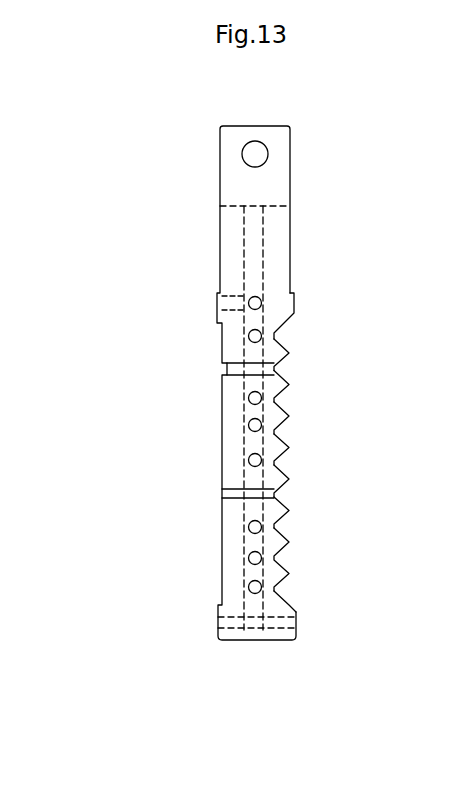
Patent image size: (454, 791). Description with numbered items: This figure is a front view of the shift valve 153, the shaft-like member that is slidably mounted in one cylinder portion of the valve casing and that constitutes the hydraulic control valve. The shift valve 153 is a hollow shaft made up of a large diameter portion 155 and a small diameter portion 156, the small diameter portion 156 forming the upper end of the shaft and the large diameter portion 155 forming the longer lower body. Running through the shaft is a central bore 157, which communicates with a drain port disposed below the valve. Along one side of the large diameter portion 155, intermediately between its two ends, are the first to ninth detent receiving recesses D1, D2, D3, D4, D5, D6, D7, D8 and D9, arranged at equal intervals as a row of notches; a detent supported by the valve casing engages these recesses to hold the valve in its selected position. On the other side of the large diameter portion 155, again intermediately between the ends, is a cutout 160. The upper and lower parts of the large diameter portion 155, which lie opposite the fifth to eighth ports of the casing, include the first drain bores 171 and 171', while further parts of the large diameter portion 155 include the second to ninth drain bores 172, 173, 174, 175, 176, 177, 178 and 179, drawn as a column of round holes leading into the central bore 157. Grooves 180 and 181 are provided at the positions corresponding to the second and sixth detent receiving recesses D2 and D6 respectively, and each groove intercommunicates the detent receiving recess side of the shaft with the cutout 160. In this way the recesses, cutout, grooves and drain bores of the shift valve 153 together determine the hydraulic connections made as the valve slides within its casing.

The shift valve 153 is at (213, 268).
The small diameter portion 156 is at (283, 222).
The cutout 160 is at (219, 326).
The first drain bore 171 is at (167, 272).
The first drain bore 171' is at (184, 684).
The second drain bore 172 is at (259, 299).
The third drain bore 173 is at (248, 337).
The fourth drain bore 174 is at (249, 401).
The fifth drain bore 175 is at (249, 429).
The sixth drain bore 176 is at (249, 462).
The seventh drain bore 177 is at (249, 529).
The eighth drain bore 178 is at (249, 561).
The ninth drain bore 179 is at (249, 590).
The groove 180 is at (226, 369).
The groove 181 is at (226, 494).
The large diameter portion 155 is at (232, 641).
The central bore 157 is at (262, 641).
The first detent receiving recess D1 is at (283, 330).
The second detent receiving recess D2 is at (289, 366).
The third detent receiving recess D3 is at (291, 410).
The fourth detent receiving recess D4 is at (289, 441).
The fifth detent receiving recess D5 is at (288, 476).
The sixth detent receiving recess D6 is at (289, 510).
The seventh detent receiving recess D7 is at (288, 541).
The eighth detent receiving recess D8 is at (289, 575).
The ninth detent receiving recess D9 is at (291, 603).